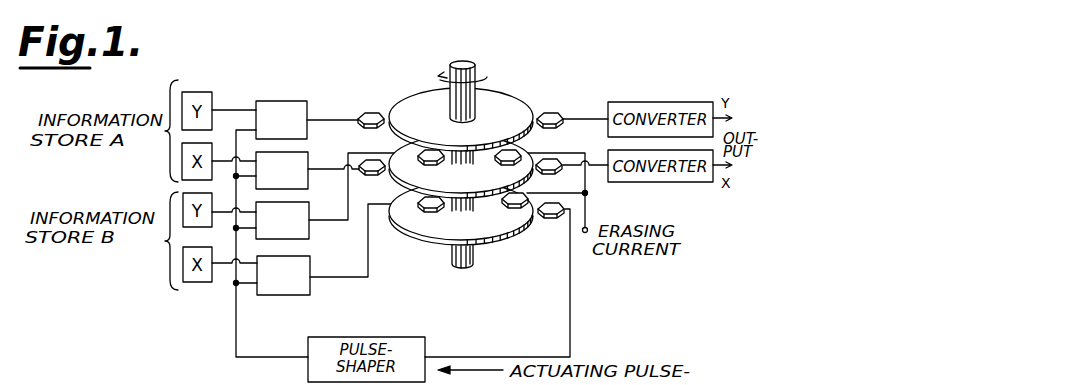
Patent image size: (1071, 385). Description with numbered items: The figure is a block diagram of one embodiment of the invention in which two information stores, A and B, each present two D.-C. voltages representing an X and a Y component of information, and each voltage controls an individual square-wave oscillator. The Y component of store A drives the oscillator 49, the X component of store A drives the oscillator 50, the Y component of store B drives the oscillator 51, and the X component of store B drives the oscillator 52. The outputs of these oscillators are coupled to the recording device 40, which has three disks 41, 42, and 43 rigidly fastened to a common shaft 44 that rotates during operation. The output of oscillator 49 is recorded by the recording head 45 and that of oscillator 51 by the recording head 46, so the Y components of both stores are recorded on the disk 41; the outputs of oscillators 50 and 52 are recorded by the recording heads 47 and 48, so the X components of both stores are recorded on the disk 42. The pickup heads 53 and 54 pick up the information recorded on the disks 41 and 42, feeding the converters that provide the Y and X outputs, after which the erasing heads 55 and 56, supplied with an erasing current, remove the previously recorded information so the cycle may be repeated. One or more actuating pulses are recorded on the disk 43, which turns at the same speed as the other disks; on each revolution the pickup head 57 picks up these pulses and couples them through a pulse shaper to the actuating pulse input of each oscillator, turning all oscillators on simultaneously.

The recording device 40 is at (486, 153).
The disk 41 is at (517, 98).
The disk 42 is at (537, 145).
The disk 43 is at (498, 241).
The shaft 44 is at (468, 62).
The recording head 45 is at (371, 112).
The recording head 46 is at (436, 162).
The recording head 47 is at (365, 176).
The recording head 48 is at (436, 209).
The oscillator 49 is at (298, 101).
The oscillator 50 is at (308, 156).
The oscillator 51 is at (310, 206).
The oscillator 52 is at (320, 250).
The pickup head 53 is at (557, 112).
The pickup head 54 is at (554, 172).
The erasing head 55 is at (512, 162).
The erasing head 56 is at (513, 205).
The pickup head 57 is at (546, 220).